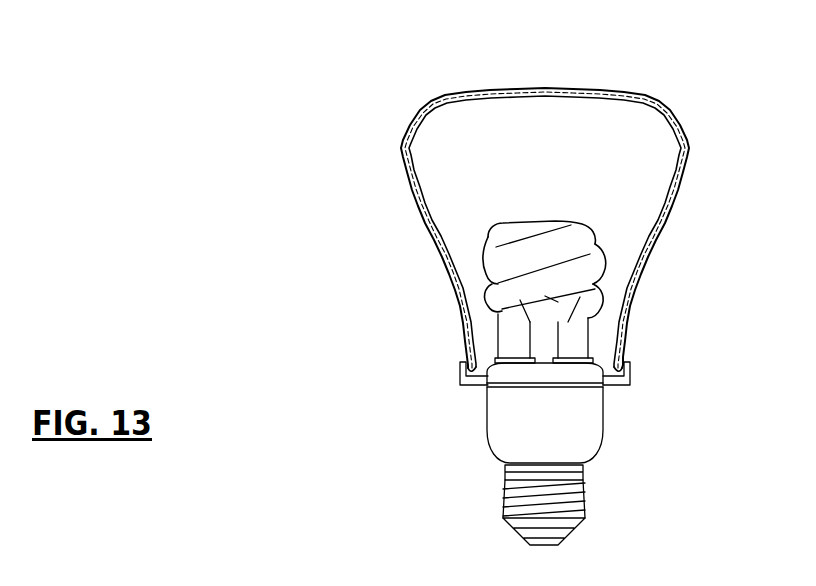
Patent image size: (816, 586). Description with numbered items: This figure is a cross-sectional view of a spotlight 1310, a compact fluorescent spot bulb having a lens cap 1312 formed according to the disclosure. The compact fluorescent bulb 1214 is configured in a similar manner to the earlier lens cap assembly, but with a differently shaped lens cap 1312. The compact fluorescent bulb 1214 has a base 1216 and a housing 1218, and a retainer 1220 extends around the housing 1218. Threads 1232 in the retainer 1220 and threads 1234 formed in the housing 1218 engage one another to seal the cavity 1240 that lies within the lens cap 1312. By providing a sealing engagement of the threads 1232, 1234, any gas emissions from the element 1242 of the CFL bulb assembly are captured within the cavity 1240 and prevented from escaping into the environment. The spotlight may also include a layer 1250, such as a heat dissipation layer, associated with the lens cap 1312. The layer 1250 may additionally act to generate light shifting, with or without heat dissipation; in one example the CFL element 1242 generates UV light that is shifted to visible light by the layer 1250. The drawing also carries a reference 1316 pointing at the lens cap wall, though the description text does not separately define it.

The compact fluorescent bulb 1214 is at (572, 454).
The base 1216 is at (507, 502).
The housing 1218 is at (493, 422).
The retainer 1220 is at (543, 361).
The threads 1232 is at (630, 365).
The threads 1234 is at (472, 368).
The cavity 1240 is at (515, 201).
The element 1242 is at (603, 262).
The layer 1250 is at (547, 90).
The spotlight 1310 is at (514, 201).
The lens cap 1312 is at (438, 100).
The inner layer 1316 is at (384, 138).